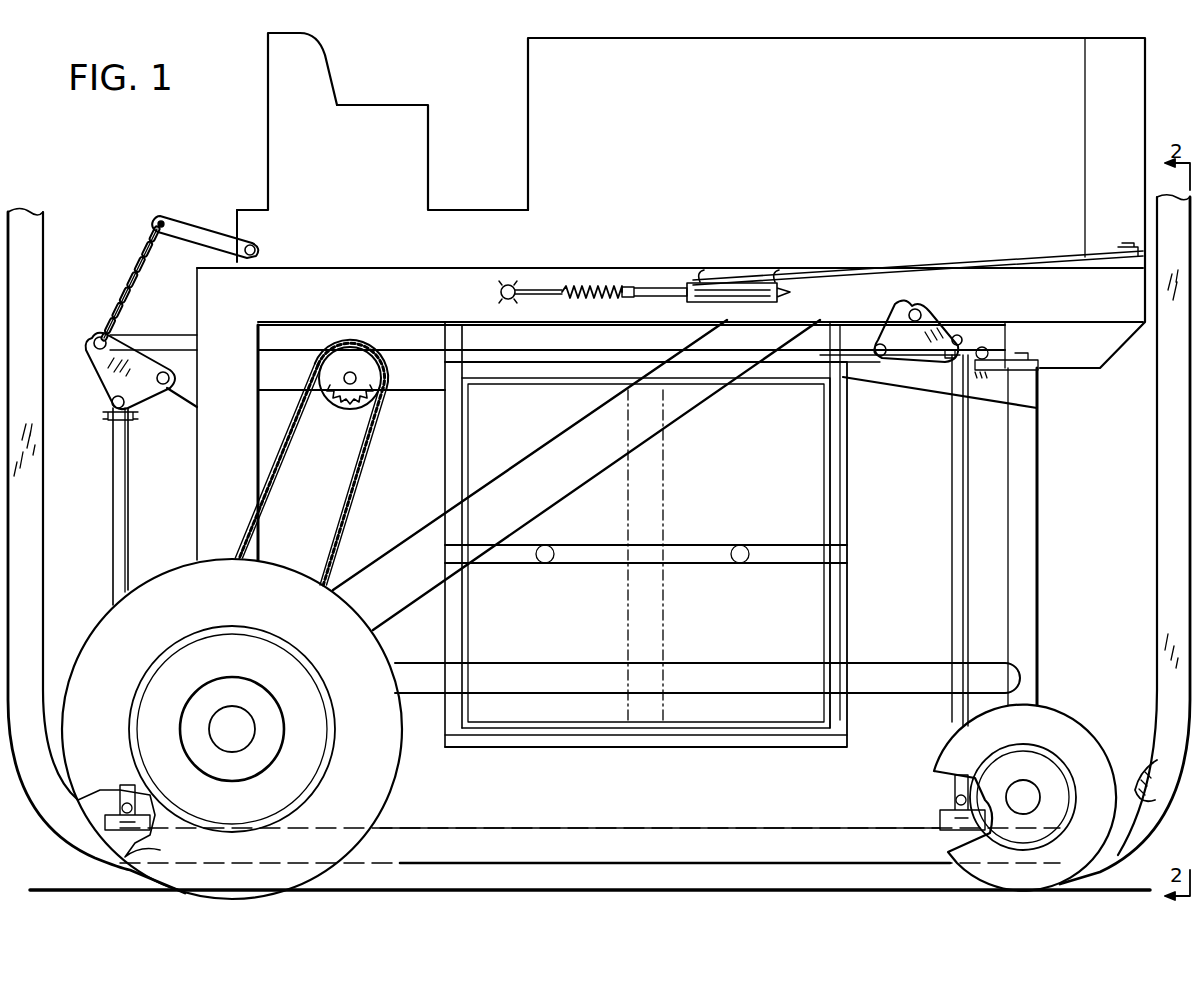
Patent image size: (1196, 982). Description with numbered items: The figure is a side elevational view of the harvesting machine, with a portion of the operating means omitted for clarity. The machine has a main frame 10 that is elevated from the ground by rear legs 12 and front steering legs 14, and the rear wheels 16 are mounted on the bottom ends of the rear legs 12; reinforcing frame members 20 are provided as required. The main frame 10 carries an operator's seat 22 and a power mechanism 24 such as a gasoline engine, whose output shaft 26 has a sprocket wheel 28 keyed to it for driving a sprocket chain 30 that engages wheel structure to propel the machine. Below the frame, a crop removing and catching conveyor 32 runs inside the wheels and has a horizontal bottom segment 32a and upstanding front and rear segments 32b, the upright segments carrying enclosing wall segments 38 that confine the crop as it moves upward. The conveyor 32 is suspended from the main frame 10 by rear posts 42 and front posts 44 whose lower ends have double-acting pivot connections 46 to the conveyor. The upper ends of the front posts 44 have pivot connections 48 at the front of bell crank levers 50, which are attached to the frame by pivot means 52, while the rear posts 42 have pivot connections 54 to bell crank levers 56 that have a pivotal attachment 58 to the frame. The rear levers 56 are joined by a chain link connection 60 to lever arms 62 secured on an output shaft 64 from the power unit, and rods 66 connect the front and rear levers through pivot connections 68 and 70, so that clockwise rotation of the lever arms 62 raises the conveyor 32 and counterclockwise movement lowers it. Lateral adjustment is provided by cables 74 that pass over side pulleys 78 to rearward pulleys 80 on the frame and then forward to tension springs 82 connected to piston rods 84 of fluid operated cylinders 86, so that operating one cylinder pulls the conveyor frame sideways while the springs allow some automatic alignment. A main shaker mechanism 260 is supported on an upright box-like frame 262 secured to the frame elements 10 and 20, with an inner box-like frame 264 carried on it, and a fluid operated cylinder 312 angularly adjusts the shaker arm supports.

The main frame 10 is at (213, 313).
The rear legs 12 is at (212, 485).
The front steering legs 14 is at (1020, 538).
The rear wheels 16 is at (373, 787).
The reinforcing frame members 20 is at (683, 407).
The operator's seat 22 is at (310, 60).
The power mechanism 24 is at (546, 77).
The output shaft 26 is at (357, 377).
The sprocket wheel 28 is at (340, 395).
The sprocket chain 30 is at (345, 505).
The conveyors 32 is at (553, 840).
The horizontal bottom segment 32a is at (722, 838).
The upstanding front and rear segments 32b is at (28, 247).
The enclosing wall segments 38 is at (1150, 772).
The rear posts 42 is at (120, 532).
The front posts 44 is at (953, 555).
The pivot connections 46 is at (122, 808).
The pivot connections 48 is at (948, 358).
The bell crank levers 50 is at (917, 345).
The pivot means 52 is at (912, 308).
The pivot connections 54 is at (104, 420).
The bell crank levers 56 is at (118, 380).
The pivotal attachment 58 is at (163, 386).
The chain link connection 60 is at (132, 292).
The lever arms 62 is at (187, 232).
The output shaft 64 is at (244, 240).
The rods 66 is at (168, 345).
The pivot connections 68 is at (880, 358).
The pivot connections 70 is at (96, 342).
The cables 74 is at (963, 262).
The side pulleys 78 is at (1125, 253).
The rearwardly disposed pulleys 80 is at (500, 293).
The tension springs 82 is at (590, 285).
The piston rods 84 is at (672, 296).
The fluid operated cylinders 86 is at (754, 302).
The main shaker mechanism 260 is at (822, 469).
The box-like frame 262 is at (705, 552).
The inwardly disposed box-like frame 264 is at (778, 745).
The fluid operated cylinder 312 is at (552, 546).